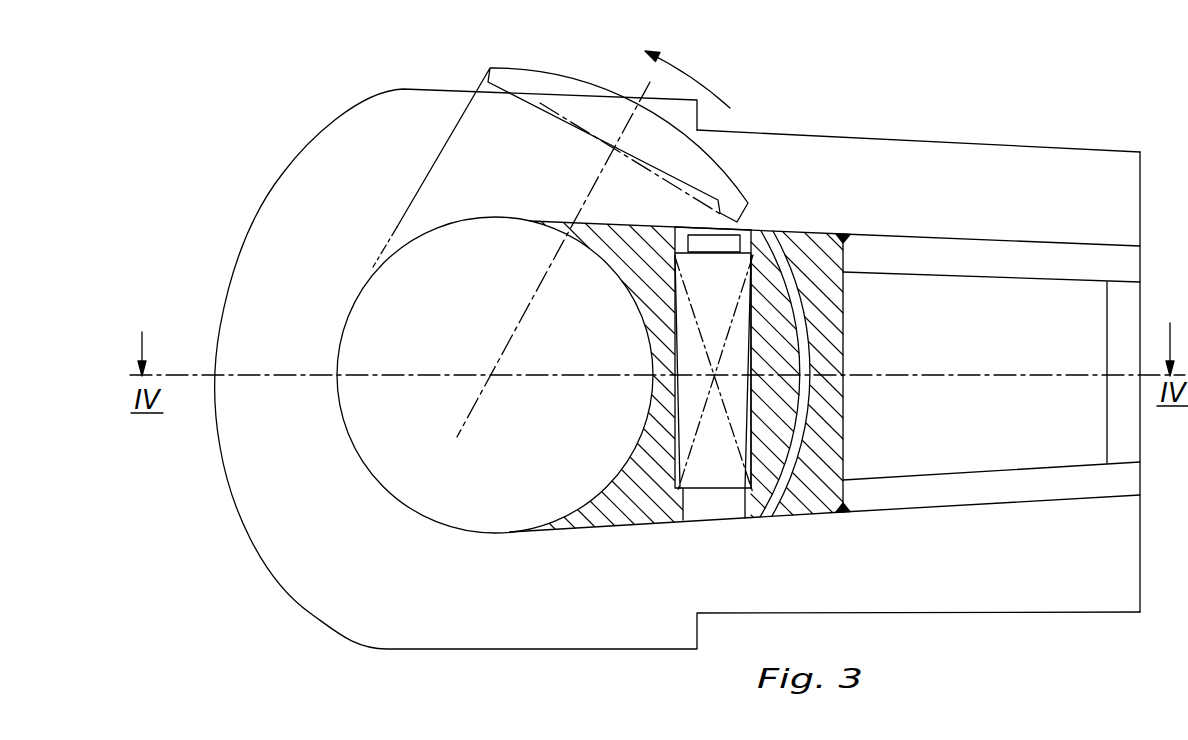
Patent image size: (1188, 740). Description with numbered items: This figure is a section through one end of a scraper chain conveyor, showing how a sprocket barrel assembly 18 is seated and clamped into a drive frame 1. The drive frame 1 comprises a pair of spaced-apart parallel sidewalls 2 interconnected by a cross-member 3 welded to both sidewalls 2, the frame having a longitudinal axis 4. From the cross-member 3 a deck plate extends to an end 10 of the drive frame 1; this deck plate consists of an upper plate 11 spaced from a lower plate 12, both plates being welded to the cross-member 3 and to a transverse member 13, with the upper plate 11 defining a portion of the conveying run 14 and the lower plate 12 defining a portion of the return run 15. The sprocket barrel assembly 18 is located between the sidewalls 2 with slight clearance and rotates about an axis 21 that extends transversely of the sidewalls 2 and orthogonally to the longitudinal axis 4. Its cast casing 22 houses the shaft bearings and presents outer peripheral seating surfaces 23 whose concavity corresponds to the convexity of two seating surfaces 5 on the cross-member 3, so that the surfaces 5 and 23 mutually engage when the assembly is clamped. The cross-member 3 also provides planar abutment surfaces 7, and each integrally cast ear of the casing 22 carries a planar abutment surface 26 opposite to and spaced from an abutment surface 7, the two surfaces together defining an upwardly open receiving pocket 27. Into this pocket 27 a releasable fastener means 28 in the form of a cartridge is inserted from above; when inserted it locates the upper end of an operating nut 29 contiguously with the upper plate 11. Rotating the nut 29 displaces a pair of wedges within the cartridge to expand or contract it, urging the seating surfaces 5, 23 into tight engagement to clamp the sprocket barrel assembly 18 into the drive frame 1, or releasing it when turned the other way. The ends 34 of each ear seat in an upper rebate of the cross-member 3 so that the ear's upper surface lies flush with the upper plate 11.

The drive frame 1 is at (882, 134).
The sidewalls 2 is at (293, 175).
The cross-member 3 is at (852, 328).
The longitudinal axis 4 is at (958, 370).
The convex seating surfaces 5 is at (623, 288).
The planar abutment surfaces 7 is at (680, 324).
The end of the drive frame 10 is at (1140, 444).
The upper plate 11 is at (987, 247).
The lower plate 12 is at (983, 483).
The transverse member 13 is at (1132, 313).
The conveying run 14 is at (862, 202).
The return run 15 is at (910, 569).
The sprocket barrel assembly 18 is at (338, 316).
The axis 21 is at (492, 374).
The cast casing 22 is at (362, 467).
The seating surfaces 23 is at (600, 257).
The planar abutment surface 26 is at (745, 455).
The receiving pocket 27 is at (683, 228).
The releasable fastener means 28 is at (690, 398).
The operating nut 29 is at (728, 242).
The ends of each ear 34 is at (598, 177).